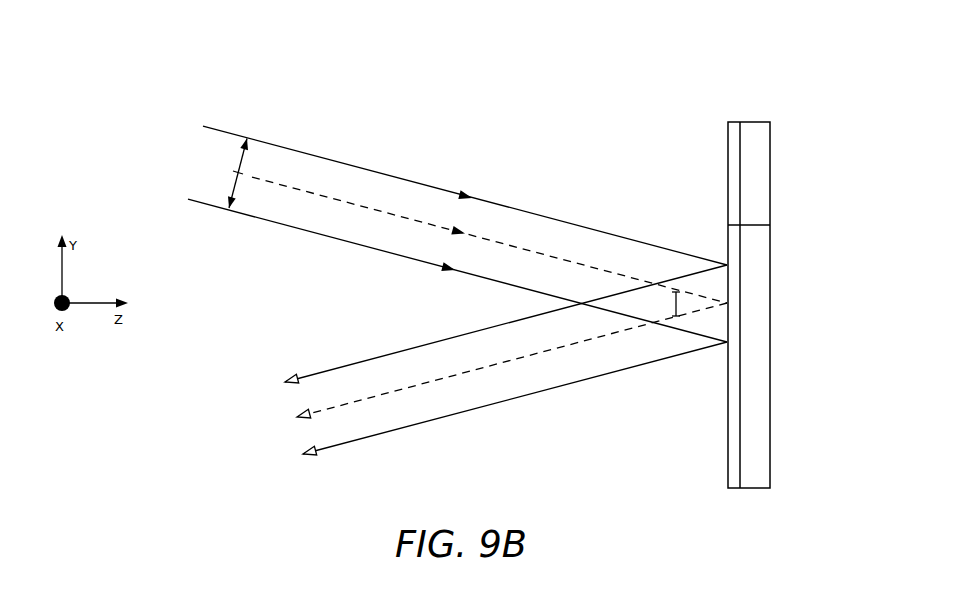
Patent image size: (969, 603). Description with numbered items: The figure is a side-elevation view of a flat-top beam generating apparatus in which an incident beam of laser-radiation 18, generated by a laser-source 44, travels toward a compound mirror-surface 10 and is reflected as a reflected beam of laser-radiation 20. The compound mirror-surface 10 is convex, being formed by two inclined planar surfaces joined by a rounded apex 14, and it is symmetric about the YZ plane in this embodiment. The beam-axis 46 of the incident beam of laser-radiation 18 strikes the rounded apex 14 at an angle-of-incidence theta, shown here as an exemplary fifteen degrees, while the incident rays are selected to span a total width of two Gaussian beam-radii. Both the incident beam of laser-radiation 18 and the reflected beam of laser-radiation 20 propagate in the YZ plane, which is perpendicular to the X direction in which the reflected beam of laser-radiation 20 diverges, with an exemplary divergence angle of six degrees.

The compound mirror-surface 10 is at (726, 178).
The rounded apex 14 is at (771, 225).
The incident beam of laser-radiation 18 is at (289, 137).
The reflected beam of laser-radiation 20 is at (372, 343).
The laser-source 44 is at (159, 164).
The beam-axis 46 is at (557, 255).